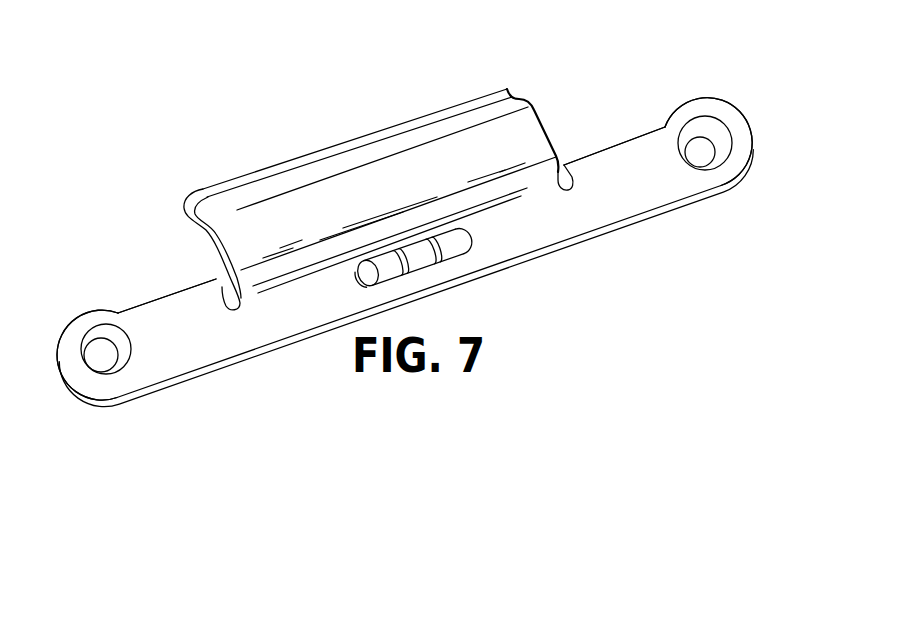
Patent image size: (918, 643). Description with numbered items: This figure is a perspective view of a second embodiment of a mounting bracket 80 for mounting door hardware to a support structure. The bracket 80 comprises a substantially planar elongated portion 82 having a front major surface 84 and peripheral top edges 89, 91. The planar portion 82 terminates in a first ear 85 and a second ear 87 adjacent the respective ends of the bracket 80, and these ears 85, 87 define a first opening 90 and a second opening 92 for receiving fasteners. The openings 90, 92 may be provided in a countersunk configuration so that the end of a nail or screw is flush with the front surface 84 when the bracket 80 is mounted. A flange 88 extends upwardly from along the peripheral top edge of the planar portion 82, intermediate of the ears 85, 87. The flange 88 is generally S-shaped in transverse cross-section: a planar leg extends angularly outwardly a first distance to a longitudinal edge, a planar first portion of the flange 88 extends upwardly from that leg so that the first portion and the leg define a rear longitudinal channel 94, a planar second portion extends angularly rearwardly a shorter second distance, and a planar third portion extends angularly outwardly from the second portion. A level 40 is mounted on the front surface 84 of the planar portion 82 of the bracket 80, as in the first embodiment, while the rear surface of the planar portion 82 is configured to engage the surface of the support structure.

The mounting bracket 80 is at (548, 76).
The planar elongated portion 82 is at (238, 329).
The front major surface 84 is at (567, 217).
The first ear 85 is at (92, 312).
The second ear 87 is at (740, 120).
The flange 88 is at (337, 157).
The peripheral top edge 89 is at (157, 300).
The first opening 90 is at (103, 347).
The peripheral top edge 91 is at (595, 151).
The second opening 92 is at (707, 146).
The rear longitudinal channel 94 is at (210, 245).
The level 40 is at (417, 262).